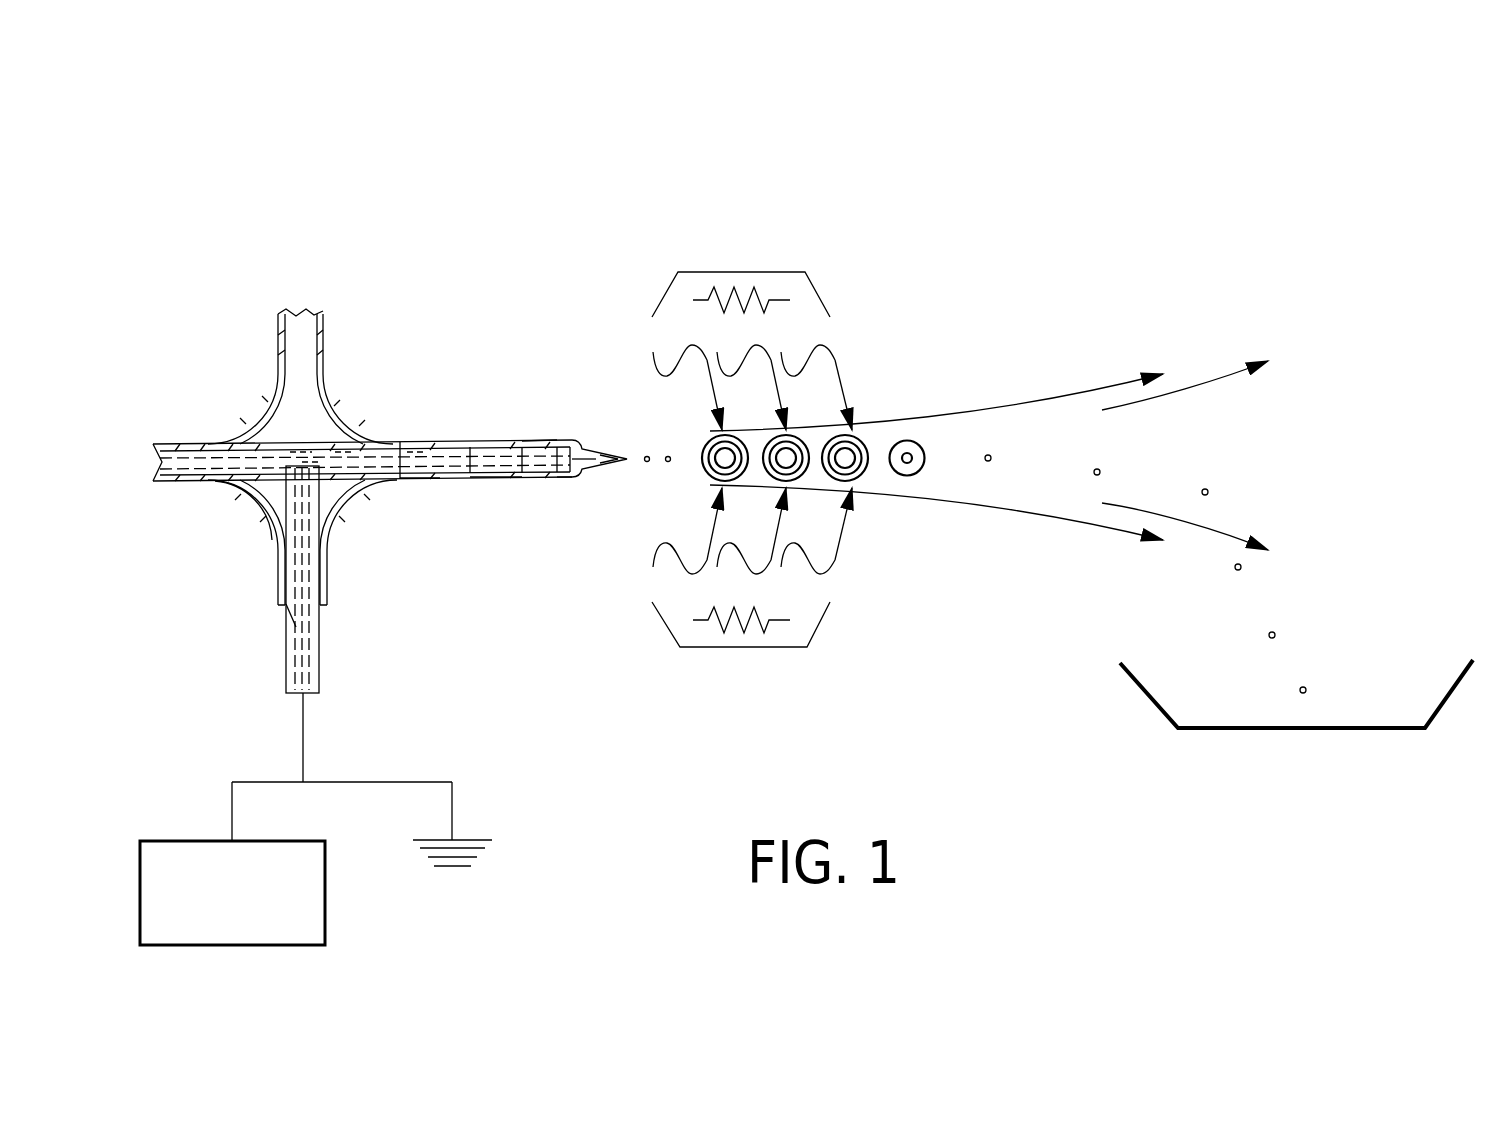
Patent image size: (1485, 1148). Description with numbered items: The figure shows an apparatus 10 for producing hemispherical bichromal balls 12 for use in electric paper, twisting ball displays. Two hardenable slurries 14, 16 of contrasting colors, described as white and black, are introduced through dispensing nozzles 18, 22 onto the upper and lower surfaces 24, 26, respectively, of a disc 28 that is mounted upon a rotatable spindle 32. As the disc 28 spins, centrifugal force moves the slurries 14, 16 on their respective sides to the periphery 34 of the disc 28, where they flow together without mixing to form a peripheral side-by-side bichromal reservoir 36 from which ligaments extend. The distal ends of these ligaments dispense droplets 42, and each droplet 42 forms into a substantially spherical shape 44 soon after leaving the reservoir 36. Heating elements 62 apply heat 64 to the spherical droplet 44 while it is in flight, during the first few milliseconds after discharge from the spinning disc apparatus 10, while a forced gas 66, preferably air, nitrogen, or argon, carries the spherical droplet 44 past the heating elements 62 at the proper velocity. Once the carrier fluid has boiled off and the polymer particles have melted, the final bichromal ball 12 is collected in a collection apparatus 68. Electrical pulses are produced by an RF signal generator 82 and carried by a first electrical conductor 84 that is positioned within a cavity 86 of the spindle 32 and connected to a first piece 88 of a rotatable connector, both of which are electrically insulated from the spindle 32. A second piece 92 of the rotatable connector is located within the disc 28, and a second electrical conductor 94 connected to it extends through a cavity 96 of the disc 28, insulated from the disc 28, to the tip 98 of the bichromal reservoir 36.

The apparatus 10 is at (486, 335).
The hemispherical bichromal balls 12 is at (988, 454).
The hardenable slurry 14 is at (483, 441).
The hardenable slurry 16 is at (477, 478).
The dispensing nozzle 18 is at (322, 350).
The dispensing nozzle 22 is at (286, 578).
The upper surface 24 is at (532, 441).
The lower surface 26 is at (418, 478).
The disc 28 is at (252, 490).
The rotatable spindle 32 is at (288, 673).
The periphery 34 is at (563, 482).
The bichromal reservoir 36 is at (577, 440).
The droplets 42 is at (647, 463).
The spherical droplet 44 is at (668, 463).
The heating elements 62 is at (775, 299).
The heat 64 is at (833, 355).
The forced gas 66 is at (1075, 392).
The collection apparatus 68 is at (1245, 730).
The RF signal generator 82 is at (300, 947).
The first electrical conductor 84 is at (305, 726).
The cavity 86 is at (277, 598).
The first piece of rotatable connector 88 is at (312, 468).
The second piece of rotatable connector 92 is at (300, 455).
The second electrical conductor 94 is at (345, 456).
The cavity 96 is at (417, 456).
The tip 98 is at (613, 457).